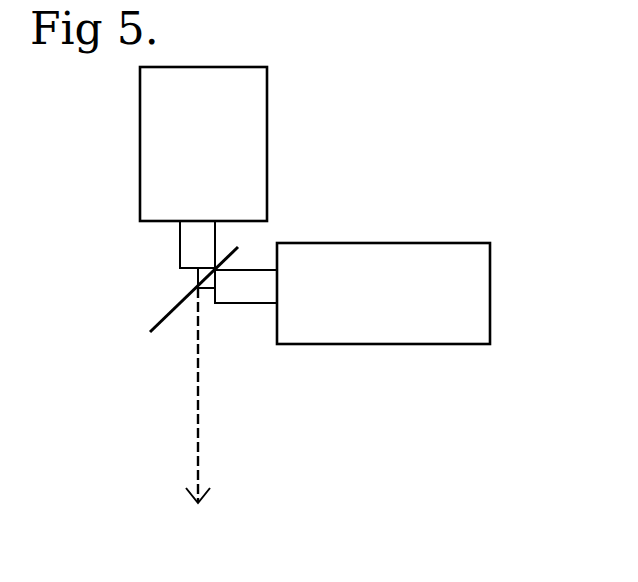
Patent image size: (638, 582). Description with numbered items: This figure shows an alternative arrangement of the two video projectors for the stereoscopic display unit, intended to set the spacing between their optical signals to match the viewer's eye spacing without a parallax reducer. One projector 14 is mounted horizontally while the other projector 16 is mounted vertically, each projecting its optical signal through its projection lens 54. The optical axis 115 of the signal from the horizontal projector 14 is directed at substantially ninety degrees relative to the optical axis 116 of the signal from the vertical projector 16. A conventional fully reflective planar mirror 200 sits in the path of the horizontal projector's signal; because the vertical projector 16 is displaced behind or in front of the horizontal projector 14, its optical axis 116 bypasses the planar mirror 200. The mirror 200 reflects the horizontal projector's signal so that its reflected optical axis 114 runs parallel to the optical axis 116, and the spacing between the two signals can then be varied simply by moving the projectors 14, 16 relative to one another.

The video projector 16 is at (235, 90).
The video projector 14 is at (470, 297).
The projection lens 54 is at (255, 275).
The planar mirror 200 is at (172, 313).
The optical axis 115 is at (260, 325).
The optical axis 114 is at (281, 395).
The optical axis 116 is at (198, 388).